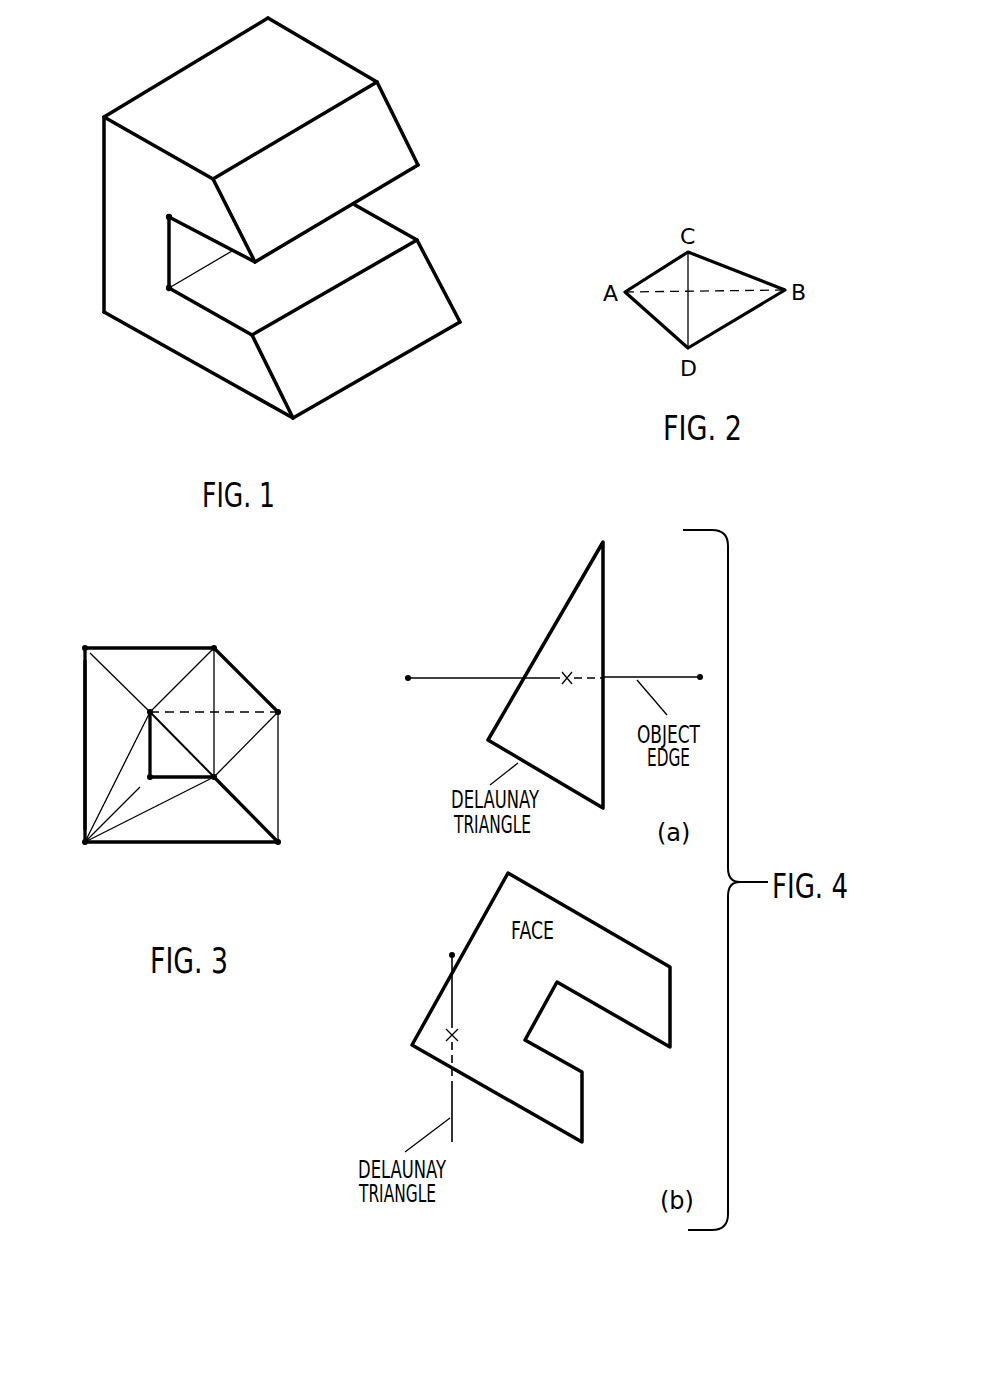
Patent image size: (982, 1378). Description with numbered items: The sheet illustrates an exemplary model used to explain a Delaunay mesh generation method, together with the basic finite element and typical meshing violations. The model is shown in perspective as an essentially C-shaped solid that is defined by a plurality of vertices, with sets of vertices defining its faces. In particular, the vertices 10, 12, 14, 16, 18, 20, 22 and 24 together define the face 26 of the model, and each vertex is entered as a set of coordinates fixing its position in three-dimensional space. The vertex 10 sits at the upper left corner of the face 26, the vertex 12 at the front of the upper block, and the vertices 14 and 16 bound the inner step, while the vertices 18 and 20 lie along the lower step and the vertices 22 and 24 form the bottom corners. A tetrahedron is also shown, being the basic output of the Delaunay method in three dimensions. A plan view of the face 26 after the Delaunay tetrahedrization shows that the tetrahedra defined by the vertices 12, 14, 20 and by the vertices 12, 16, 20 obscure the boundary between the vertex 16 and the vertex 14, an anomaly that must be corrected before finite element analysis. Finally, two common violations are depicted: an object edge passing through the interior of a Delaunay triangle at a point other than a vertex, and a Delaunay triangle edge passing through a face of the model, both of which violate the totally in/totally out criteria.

In FIG. 1, the vertex 10 is at (104, 117).
In FIG. 3, the vertex 10 is at (85, 648).
In FIG. 1, the vertex 12 is at (213, 179).
In FIG. 3, the vertex 12 is at (214, 648).
In FIG. 1, the vertex 14 is at (255, 262).
In FIG. 3, the vertex 14 is at (278, 712).
In FIG. 1, the vertex 16 is at (169, 217).
In FIG. 3, the vertex 16 is at (150, 712).
In FIG. 1, the vertex 18 is at (169, 288).
In FIG. 3, the vertex 18 is at (150, 777).
In FIG. 1, the vertex 20 is at (252, 335).
In FIG. 3, the vertex 20 is at (214, 777).
In FIG. 1, the vertex 22 is at (293, 418).
In FIG. 3, the vertex 22 is at (278, 842).
In FIG. 1, the vertex 24 is at (104, 312).
In FIG. 3, the vertex 24 is at (85, 842).
In FIG. 1, the face 26 is at (113, 197).
In FIG. 3, the face 26 is at (113, 737).